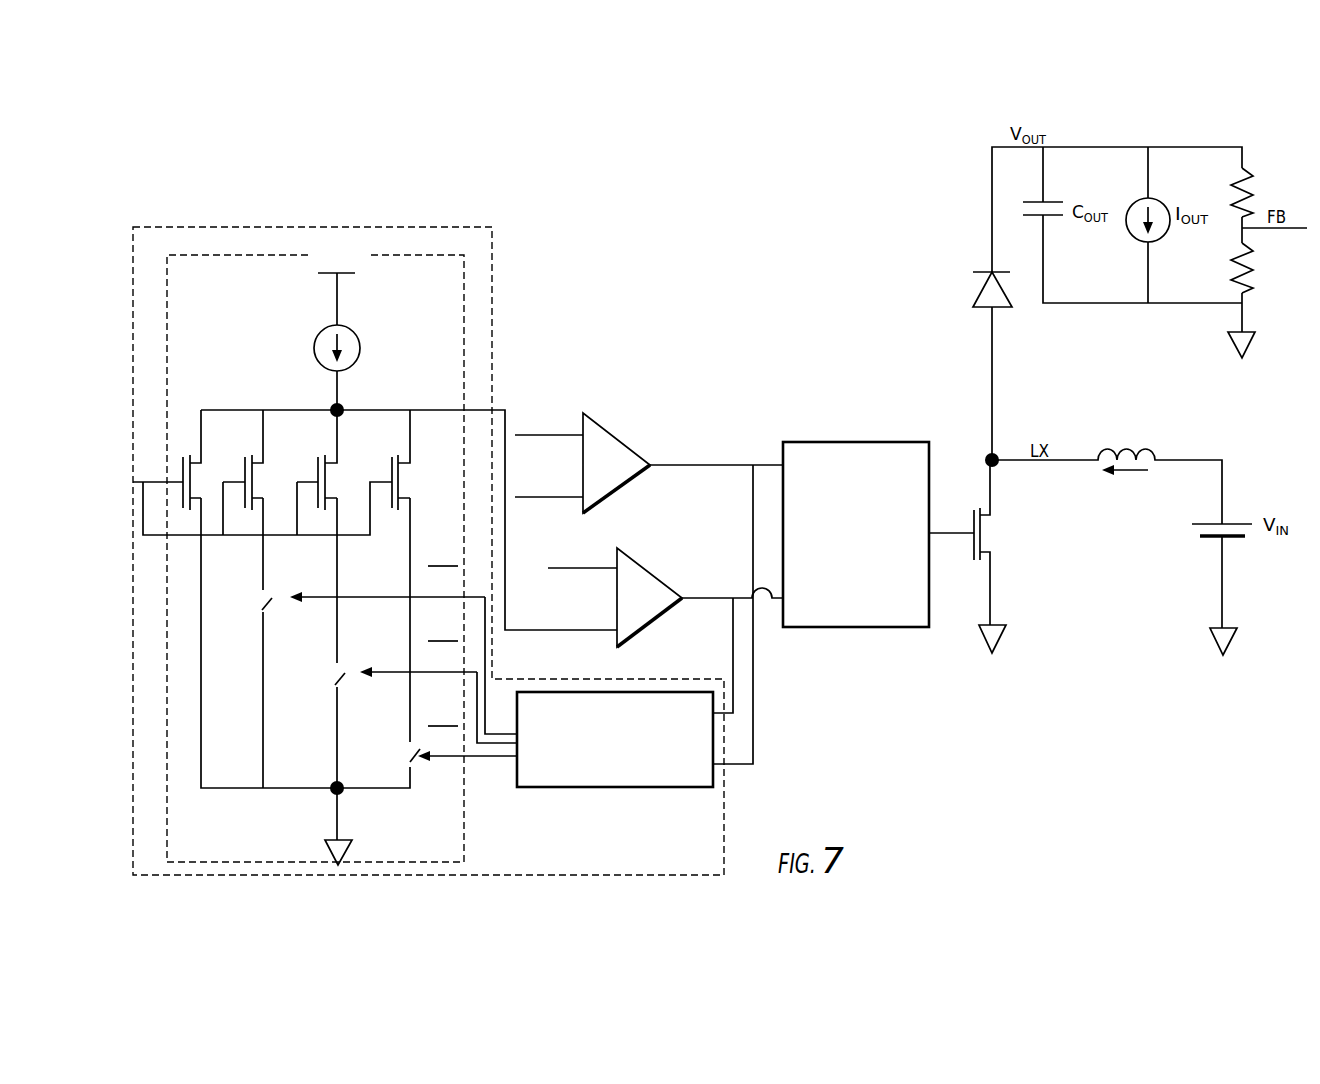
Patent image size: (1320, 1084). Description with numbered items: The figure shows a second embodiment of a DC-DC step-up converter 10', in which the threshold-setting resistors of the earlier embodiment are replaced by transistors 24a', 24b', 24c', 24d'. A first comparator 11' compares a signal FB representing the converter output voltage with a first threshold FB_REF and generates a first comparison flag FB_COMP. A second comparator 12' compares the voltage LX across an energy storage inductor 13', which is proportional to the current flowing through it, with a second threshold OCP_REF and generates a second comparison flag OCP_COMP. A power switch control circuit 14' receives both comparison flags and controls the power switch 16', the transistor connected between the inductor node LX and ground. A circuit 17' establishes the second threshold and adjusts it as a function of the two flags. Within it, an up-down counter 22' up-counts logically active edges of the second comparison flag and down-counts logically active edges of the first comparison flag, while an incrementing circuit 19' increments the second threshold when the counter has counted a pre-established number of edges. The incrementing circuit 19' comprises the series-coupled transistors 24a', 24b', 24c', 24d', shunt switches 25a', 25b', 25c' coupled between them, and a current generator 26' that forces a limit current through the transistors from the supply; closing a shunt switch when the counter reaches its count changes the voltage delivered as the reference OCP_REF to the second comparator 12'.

The DC-DC step-up converter 10' is at (558, 184).
The first comparator 11' is at (649, 431).
The second comparator 12' is at (659, 574).
The energy storage inductor 13' is at (1114, 465).
The power switch control circuit 14' is at (878, 508).
The power switch 16' is at (979, 561).
The circuit to establish the second threshold 17' is at (375, 513).
The incrementing circuit 19' is at (426, 568).
The up-down counter 22' is at (593, 687).
The transistor 24a' is at (165, 430).
The transistor 24b' is at (197, 399).
The transistor 24c' is at (234, 372).
The transistor 24d' is at (476, 437).
The shunt switch 25a' is at (302, 650).
The shunt switch 25b' is at (302, 692).
The shunt switch 25c' is at (302, 766).
The current generator 26' is at (381, 323).